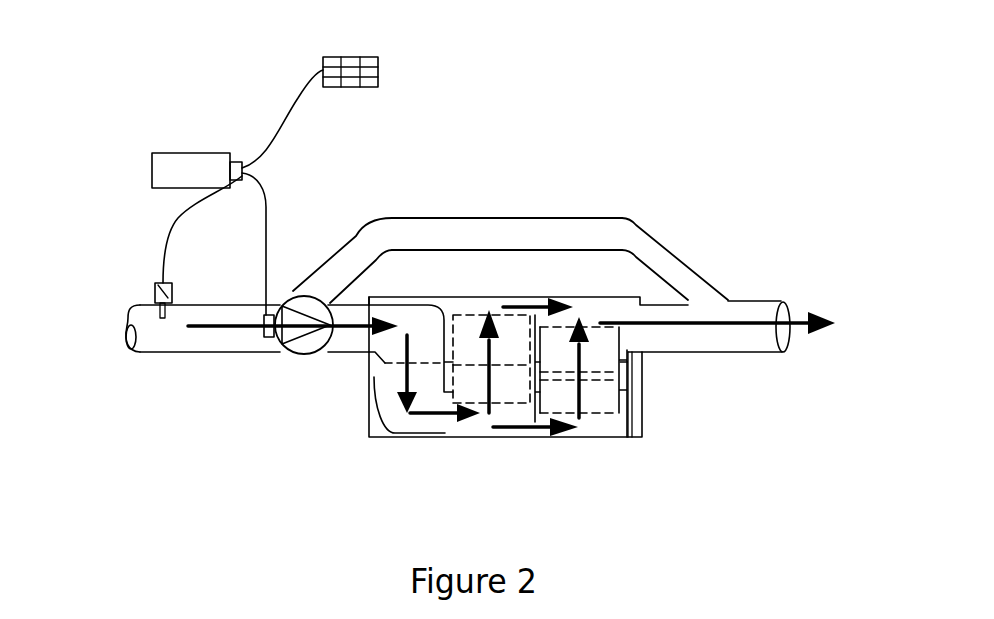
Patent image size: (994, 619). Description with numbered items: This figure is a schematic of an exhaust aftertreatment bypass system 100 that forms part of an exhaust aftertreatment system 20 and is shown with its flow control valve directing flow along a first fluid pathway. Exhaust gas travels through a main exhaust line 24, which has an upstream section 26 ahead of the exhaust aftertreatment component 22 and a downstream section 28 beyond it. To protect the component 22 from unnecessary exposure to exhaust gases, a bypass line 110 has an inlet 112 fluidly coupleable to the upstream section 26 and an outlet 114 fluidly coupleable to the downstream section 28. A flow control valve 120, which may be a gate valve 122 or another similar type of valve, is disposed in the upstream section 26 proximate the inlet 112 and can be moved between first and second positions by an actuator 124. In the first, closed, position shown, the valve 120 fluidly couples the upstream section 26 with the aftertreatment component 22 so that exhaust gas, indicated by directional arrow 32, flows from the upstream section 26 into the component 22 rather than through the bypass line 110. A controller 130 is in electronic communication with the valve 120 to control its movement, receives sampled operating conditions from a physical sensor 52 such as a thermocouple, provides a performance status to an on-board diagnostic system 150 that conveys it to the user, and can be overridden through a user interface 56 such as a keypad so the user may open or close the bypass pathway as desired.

The bypass system 100 is at (584, 58).
The controller 130 is at (132, 128).
The on-board diagnostic system 150 is at (183, 153).
The user interface 56 is at (378, 74).
The physical sensor 52 is at (155, 283).
The actuator 124 is at (267, 337).
The main exhaust line 24 is at (133, 318).
The upstream section 26 is at (188, 353).
The flow control valve 120 is at (302, 354).
The gate valve 122 is at (300, 296).
The bypass line 110 is at (505, 228).
The inlet 112 is at (310, 286).
The outlet 114 is at (677, 270).
The downstream section 28 is at (765, 303).
The exhaust aftertreatment system 20 is at (354, 484).
The exhaust aftertreatment component 22 is at (530, 400).
The directional arrow 32 is at (363, 353).